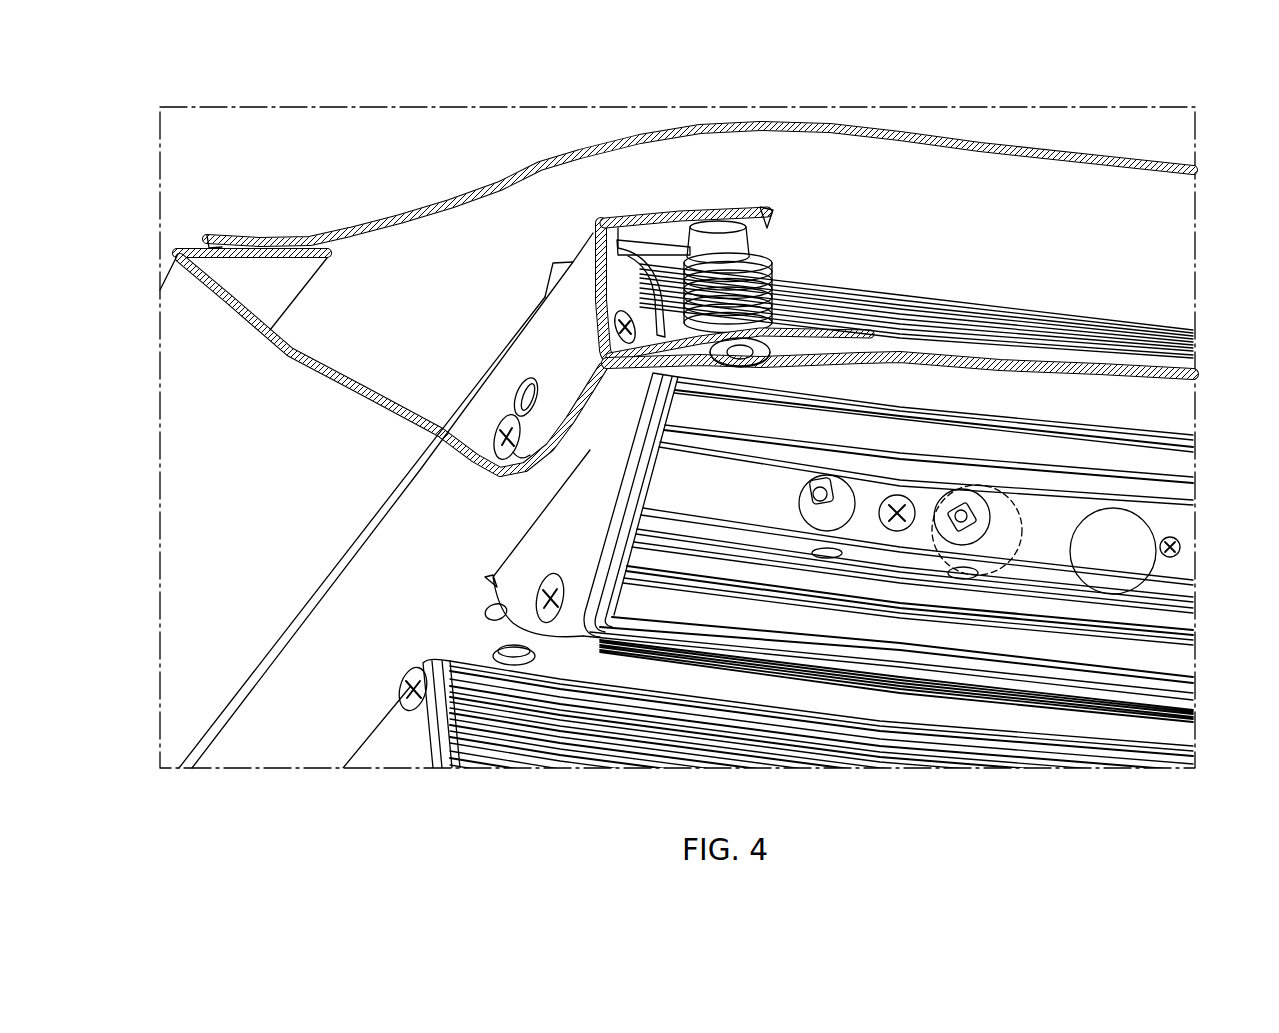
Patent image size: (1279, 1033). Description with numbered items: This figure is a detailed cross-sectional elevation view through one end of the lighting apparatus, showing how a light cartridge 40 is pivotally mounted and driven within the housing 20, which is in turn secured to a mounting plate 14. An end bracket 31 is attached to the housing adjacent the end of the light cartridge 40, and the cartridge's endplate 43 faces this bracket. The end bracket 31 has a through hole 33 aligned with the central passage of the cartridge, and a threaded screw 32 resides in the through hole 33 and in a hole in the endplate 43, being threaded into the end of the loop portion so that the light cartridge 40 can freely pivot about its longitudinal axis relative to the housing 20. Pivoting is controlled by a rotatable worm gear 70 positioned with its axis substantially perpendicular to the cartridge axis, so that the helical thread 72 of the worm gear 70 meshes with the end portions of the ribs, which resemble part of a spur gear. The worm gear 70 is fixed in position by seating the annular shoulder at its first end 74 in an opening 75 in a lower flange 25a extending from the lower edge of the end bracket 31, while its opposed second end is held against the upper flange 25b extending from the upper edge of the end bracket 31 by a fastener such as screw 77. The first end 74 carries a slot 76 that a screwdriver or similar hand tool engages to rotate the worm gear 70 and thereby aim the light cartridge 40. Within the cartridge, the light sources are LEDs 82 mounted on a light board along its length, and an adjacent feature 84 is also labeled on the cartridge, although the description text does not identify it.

The mounting plate 14 is at (1125, 243).
The housing 20 is at (308, 714).
The lower flange 25a is at (572, 262).
The upper flange 25b is at (663, 233).
The end bracket 31 is at (550, 338).
The threaded screw 32 is at (498, 415).
The through hole 33 is at (520, 380).
The light cartridge 40 is at (687, 666).
The endplate 43 is at (622, 297).
The worm gear 70 is at (790, 221).
The helical thread 72 is at (820, 245).
The first end 74 is at (813, 297).
The opening 75 is at (830, 340).
The slot 76 is at (768, 356).
The screw 77 is at (700, 207).
The LED 82 is at (968, 528).
The access hole 84 is at (1110, 530).